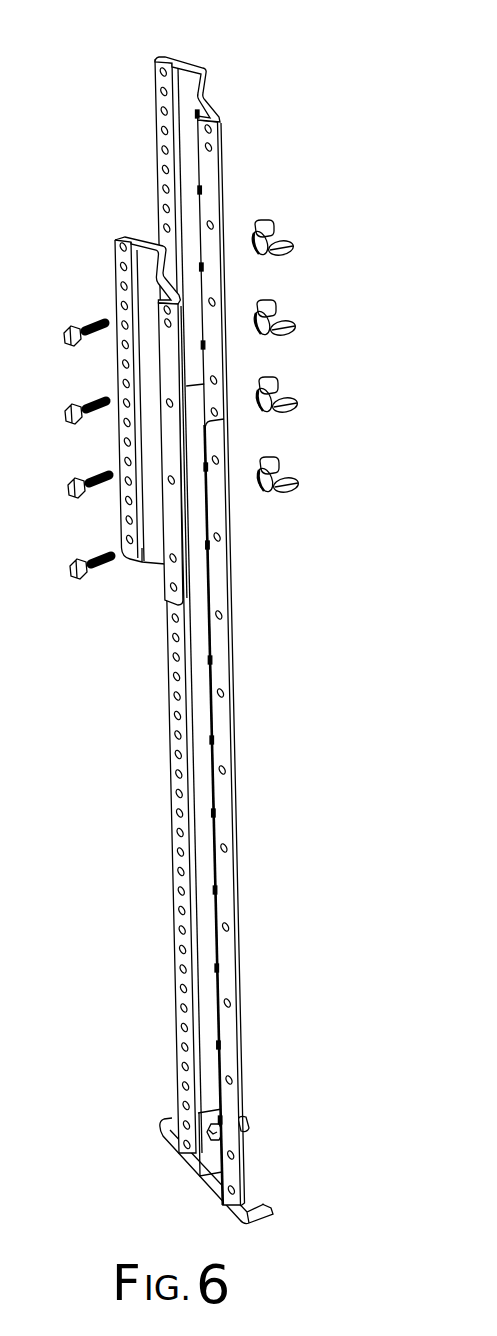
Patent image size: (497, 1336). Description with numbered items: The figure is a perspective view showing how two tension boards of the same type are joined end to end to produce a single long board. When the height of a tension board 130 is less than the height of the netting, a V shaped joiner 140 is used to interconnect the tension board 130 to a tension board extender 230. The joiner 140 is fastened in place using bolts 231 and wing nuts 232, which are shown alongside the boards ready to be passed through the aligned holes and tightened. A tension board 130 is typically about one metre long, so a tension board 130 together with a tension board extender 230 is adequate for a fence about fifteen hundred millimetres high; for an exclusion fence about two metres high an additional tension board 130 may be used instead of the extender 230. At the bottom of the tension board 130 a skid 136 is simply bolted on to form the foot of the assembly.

The tension board 130 is at (232, 810).
The skid 136 is at (250, 1200).
The V shaped joiner 140 is at (135, 243).
The tension board extender 230 is at (206, 74).
The bolts 231 is at (68, 578).
The wing nuts 232 is at (300, 482).